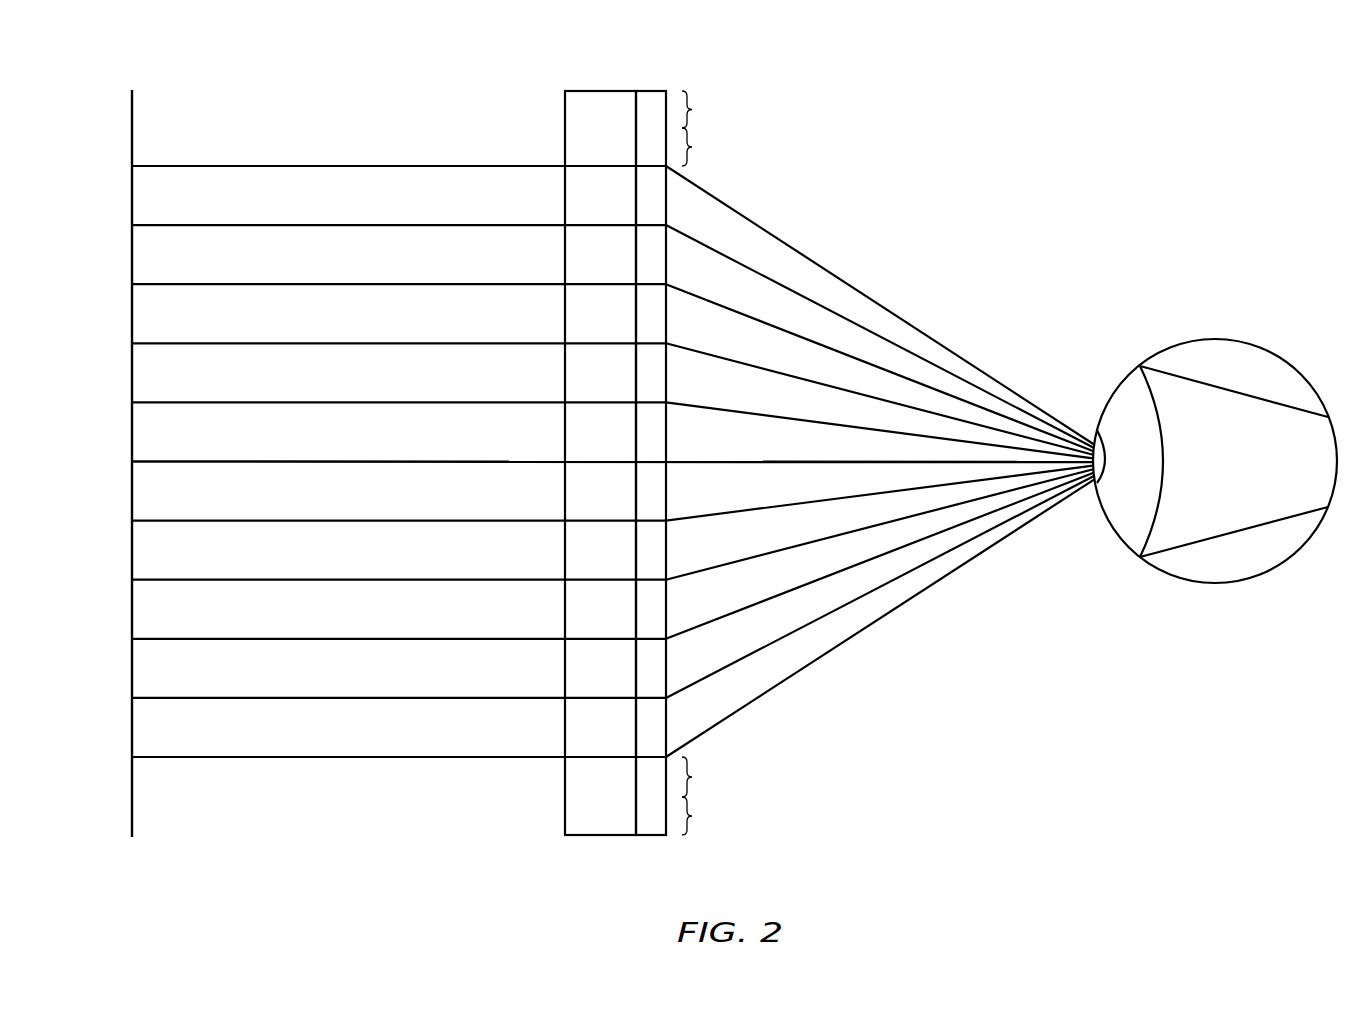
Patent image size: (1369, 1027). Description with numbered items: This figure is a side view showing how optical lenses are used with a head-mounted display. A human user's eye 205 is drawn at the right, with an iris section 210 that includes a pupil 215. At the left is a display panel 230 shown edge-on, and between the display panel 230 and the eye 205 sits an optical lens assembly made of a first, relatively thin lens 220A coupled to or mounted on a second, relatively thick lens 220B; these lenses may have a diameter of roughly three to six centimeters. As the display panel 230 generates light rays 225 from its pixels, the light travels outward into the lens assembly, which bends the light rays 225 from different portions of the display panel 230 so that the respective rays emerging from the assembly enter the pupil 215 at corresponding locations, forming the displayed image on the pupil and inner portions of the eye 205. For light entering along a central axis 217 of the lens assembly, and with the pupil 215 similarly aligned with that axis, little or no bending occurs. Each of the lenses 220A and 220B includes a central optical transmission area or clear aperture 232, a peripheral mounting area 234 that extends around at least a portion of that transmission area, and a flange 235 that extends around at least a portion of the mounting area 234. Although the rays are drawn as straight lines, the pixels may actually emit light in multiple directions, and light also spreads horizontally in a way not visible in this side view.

The eye 205 is at (1223, 339).
The iris section 210 is at (1130, 378).
The pupil 215 is at (1098, 430).
The central axis 217 is at (982, 462).
The first lens 220A is at (655, 90).
The second lens 220B is at (600, 90).
The light rays 225 is at (528, 137).
The display panel 230 is at (132, 120).
The clear aperture 232 is at (792, 165).
The mounting area 234 is at (692, 147).
The flange 235 is at (692, 110).